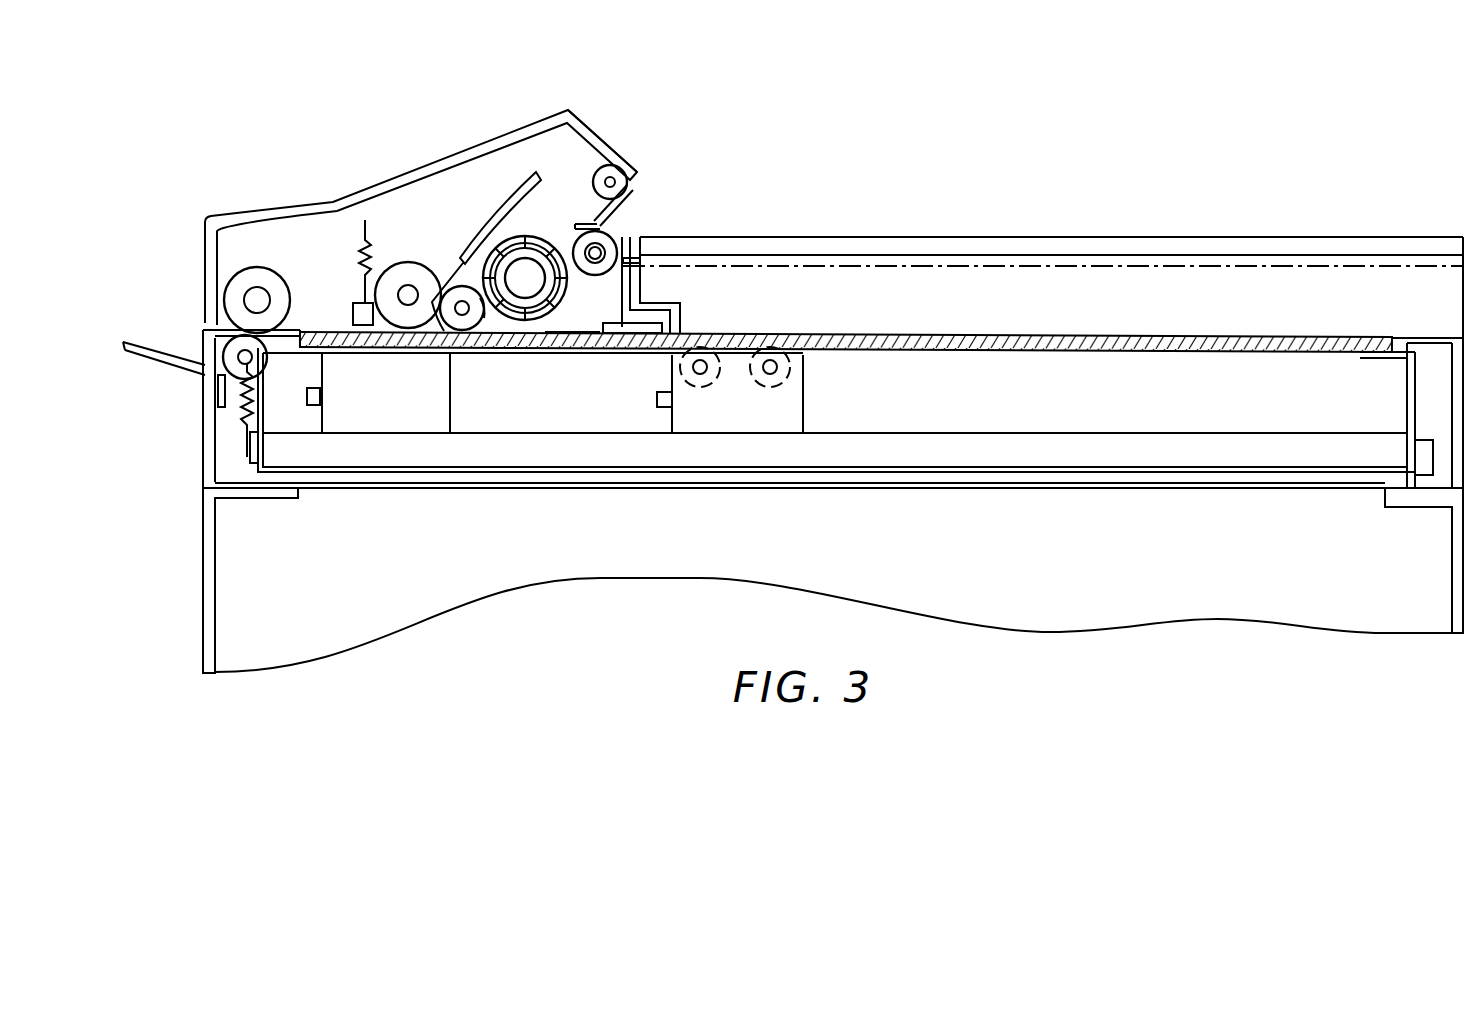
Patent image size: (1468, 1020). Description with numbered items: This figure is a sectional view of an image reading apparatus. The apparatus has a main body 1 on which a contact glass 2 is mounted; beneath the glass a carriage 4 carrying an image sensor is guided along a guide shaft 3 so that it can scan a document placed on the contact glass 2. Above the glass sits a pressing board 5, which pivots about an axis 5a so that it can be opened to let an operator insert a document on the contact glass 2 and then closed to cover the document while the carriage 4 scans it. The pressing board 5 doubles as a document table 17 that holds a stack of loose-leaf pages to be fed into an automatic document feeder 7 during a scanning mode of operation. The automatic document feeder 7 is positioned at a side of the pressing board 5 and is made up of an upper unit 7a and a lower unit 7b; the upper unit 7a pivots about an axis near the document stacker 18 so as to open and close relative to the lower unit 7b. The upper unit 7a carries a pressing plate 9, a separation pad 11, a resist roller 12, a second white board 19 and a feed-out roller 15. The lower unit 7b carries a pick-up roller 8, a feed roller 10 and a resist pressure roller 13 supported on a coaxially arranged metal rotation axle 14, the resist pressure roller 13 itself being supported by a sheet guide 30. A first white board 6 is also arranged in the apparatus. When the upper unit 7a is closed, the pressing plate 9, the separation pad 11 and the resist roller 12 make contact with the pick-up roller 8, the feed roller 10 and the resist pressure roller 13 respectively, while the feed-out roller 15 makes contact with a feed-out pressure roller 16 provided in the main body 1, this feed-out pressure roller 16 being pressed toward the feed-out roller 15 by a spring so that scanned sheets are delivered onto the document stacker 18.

The main body 1 is at (205, 520).
The contact glass 2 is at (1278, 349).
The guide shaft 3 is at (1160, 445).
The carriage 4 is at (343, 415).
The pressing board 5 is at (1260, 285).
The axis 5a is at (637, 272).
The first white board 6 is at (635, 333).
The automatic document feeder (ADF) 7 is at (592, 118).
The upper unit 7a is at (603, 141).
The lower unit 7b is at (575, 324).
The pick-up roller 8 is at (608, 233).
The pressing plate 9 is at (628, 190).
The feed roller 10 is at (530, 320).
The separation pad 11 is at (522, 190).
The resist roller 12 is at (408, 262).
The resist pressure roller 13 is at (484, 318).
The metal rotation axle 14 is at (462, 315).
The feed-out roller 15 is at (255, 272).
The feed-out pressure roller 16 is at (224, 352).
The document table 17 is at (1162, 236).
The document stacker 18 is at (153, 360).
The second white board 19 is at (337, 322).
The sheet guide 30 is at (448, 353).